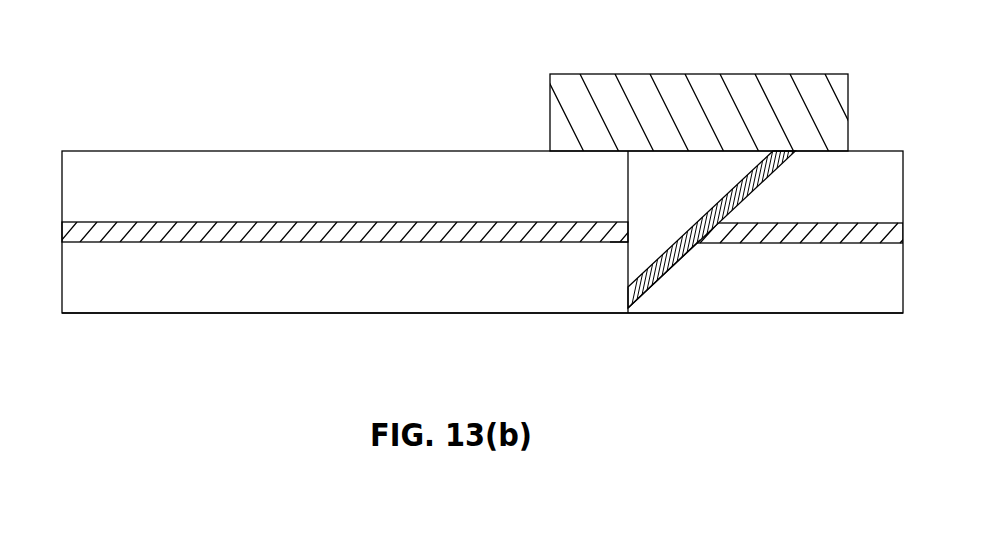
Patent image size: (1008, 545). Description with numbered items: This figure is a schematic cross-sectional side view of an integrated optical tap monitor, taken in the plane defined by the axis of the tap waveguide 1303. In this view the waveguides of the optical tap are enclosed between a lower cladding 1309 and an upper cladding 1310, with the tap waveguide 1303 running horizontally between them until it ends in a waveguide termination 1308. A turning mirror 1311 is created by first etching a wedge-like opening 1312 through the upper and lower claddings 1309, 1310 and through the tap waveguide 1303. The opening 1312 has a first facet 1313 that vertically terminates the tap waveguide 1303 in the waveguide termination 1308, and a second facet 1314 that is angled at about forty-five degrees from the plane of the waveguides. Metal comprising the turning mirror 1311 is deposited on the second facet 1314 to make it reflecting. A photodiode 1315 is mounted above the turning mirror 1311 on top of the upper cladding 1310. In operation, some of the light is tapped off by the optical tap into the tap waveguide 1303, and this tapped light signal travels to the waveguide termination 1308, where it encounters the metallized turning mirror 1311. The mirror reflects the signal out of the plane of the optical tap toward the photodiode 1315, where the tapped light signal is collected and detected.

The tap waveguide 1303 is at (383, 222).
The waveguide termination 1308 is at (617, 236).
The lower cladding 1309 is at (137, 300).
The upper cladding 1310 is at (218, 165).
The turning mirror 1311 is at (762, 181).
The wedge-like opening 1312 is at (647, 178).
The first facet 1313 is at (628, 273).
The second facet 1314 is at (680, 255).
The photodiode 1315 is at (700, 73).